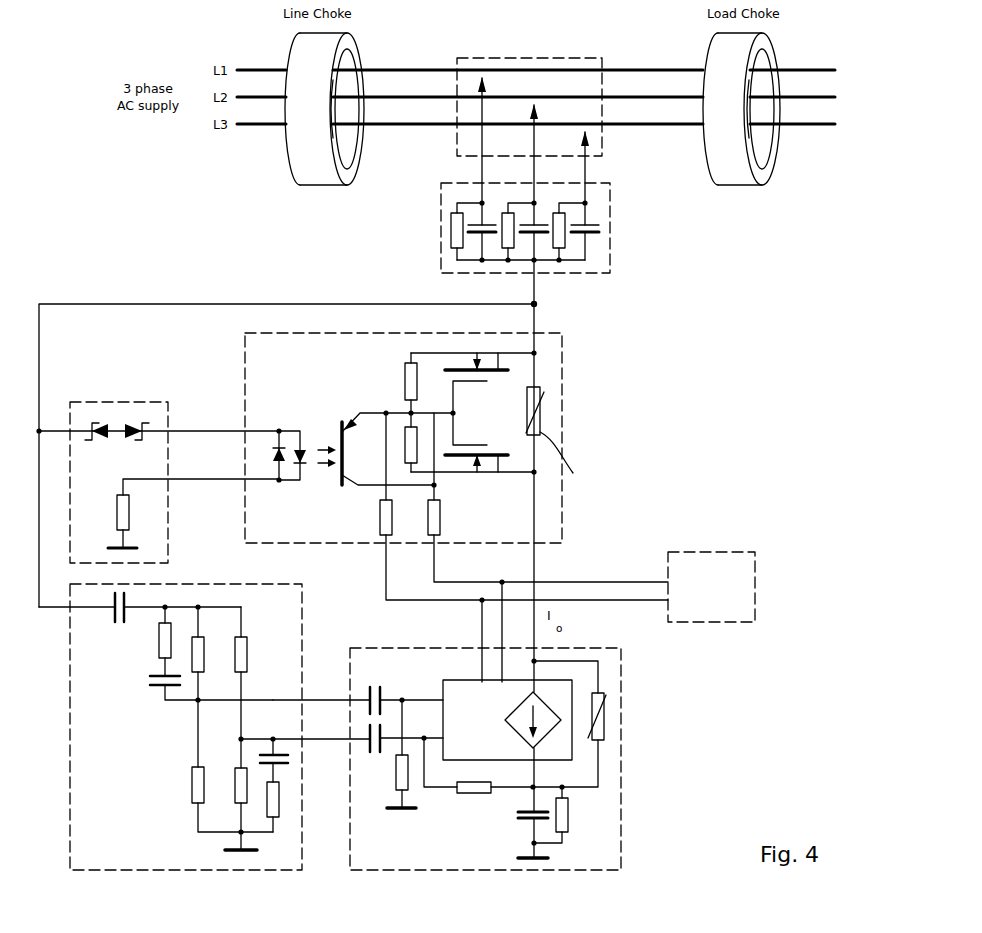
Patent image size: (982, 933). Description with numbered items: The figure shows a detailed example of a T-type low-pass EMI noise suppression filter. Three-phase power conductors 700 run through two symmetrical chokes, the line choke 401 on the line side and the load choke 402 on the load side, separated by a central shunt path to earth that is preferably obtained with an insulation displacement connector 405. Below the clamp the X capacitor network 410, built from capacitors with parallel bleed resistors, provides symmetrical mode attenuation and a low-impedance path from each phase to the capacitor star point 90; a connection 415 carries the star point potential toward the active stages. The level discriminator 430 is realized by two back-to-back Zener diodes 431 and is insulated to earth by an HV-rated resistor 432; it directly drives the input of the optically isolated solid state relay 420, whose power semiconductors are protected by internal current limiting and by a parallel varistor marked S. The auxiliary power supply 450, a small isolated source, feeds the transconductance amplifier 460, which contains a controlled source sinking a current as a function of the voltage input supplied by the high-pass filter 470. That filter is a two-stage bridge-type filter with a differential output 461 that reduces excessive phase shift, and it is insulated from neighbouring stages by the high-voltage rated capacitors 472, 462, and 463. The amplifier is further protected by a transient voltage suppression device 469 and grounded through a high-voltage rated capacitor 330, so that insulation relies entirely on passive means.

The line choke 401 is at (313, 155).
The load choke 402 is at (760, 167).
The insulation displacement connector 405 is at (585, 50).
The X capacitor network 410 is at (602, 255).
The star point connection line 415 is at (470, 295).
The capacitor star point 90 is at (537, 292).
The solid state relay 420 is at (557, 373).
The level discriminator 430 is at (157, 445).
The back-to-back Zener diodes 431 is at (130, 433).
The HV-rated resistor 432 is at (128, 513).
The auxiliary power supply 450 is at (743, 552).
The transconductance amplifier 460 is at (532, 758).
The differential output 461 is at (323, 700).
The high-voltage rated capacitor 462 is at (382, 697).
The high-voltage rated capacitor 463 is at (367, 750).
The transient voltage suppression device 469 is at (605, 707).
The high-pass filter 470 is at (191, 740).
The high-voltage rated capacitor 472 is at (110, 613).
The power conductors 700 is at (788, 58).
The high-voltage rated capacitor 330 is at (523, 818).